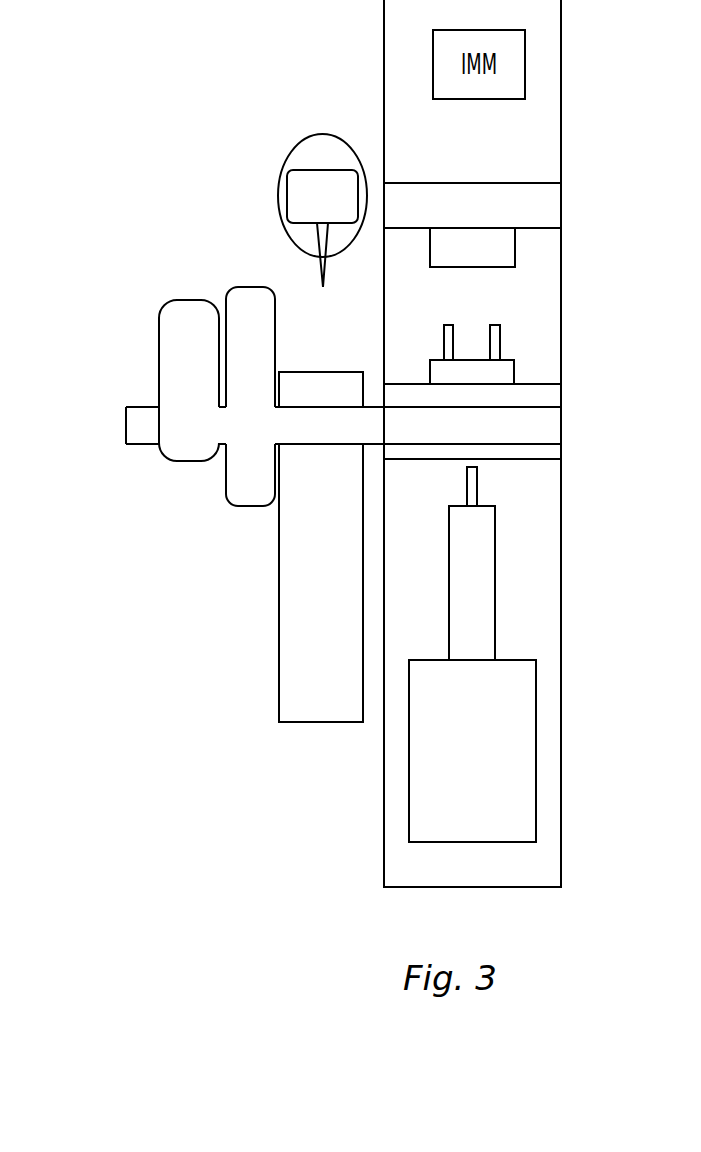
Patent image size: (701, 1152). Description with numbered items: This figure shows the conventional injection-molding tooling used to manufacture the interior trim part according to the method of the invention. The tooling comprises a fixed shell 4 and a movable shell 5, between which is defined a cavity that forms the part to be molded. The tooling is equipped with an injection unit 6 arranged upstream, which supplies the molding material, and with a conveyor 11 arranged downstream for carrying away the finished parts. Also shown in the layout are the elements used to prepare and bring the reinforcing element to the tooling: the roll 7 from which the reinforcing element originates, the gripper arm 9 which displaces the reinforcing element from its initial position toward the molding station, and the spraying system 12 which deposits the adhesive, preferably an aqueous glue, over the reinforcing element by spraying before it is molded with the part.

The fixed shell 4 is at (515, 368).
The movable shell 5 is at (516, 250).
The injection unit 6 is at (497, 633).
The roll 7 is at (247, 287).
The gripper arm 9 is at (126, 424).
The conveyor 11 is at (279, 600).
The spraying system 12 is at (298, 142).